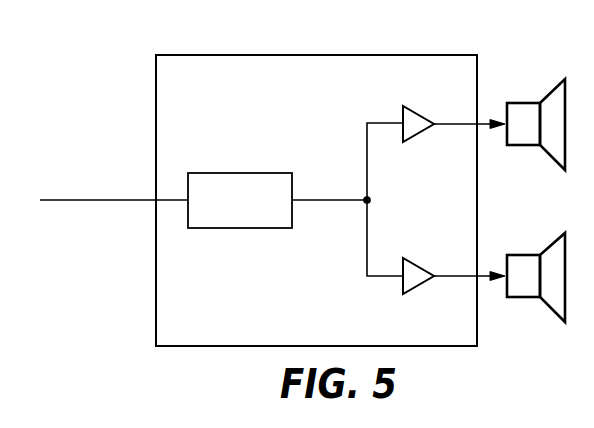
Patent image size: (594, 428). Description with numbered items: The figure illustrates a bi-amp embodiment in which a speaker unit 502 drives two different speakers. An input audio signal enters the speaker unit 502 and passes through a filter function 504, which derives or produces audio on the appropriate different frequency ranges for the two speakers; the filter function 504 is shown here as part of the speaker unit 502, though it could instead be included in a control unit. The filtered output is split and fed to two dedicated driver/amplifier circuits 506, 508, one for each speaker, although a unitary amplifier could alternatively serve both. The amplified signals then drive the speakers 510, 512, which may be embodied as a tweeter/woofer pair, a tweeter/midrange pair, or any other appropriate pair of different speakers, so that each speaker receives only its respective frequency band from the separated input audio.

The speaker unit 502 is at (333, 55).
The filter function 504 is at (205, 173).
The driver/amplifier circuit 506 is at (420, 110).
The driver/amplifier circuit 508 is at (420, 263).
The speaker 510 is at (547, 155).
The speaker 512 is at (547, 307).